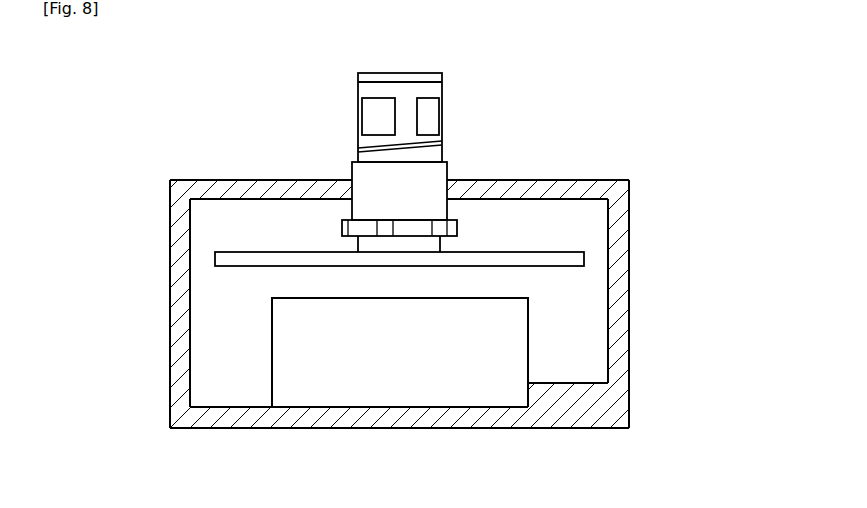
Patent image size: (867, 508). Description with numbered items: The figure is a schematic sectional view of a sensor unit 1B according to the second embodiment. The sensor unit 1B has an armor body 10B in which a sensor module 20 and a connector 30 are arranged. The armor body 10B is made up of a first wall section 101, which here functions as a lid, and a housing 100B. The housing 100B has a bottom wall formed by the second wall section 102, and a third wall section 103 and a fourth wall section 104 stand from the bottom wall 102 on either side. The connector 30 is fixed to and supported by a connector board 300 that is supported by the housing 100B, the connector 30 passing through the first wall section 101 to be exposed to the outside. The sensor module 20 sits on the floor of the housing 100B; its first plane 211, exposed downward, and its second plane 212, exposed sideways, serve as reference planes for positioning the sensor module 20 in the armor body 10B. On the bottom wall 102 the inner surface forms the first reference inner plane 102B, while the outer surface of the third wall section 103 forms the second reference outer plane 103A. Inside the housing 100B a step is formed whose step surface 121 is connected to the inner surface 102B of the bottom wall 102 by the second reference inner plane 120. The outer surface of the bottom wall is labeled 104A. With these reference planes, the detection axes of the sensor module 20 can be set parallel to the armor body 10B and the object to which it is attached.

The sensor unit 1B is at (574, 120).
The housing 100B is at (683, 254).
The armor body 10B is at (175, 162).
The first wall section 101 is at (594, 168).
The second wall section 102 is at (252, 422).
The first reference inner plane 102B is at (228, 407).
The third wall section 103 is at (638, 215).
The second reference outer plane 103A is at (630, 345).
The fourth wall section 104 is at (170, 272).
The outer surface of bottom wall 104A is at (380, 429).
The second reference inner plane 120 is at (527, 395).
The step surface 121 is at (558, 383).
The sensor module 20 is at (272, 340).
The first plane 211 is at (493, 407).
The second plane 212 is at (528, 328).
The connector 30 is at (442, 86).
The connector board 300 is at (270, 252).